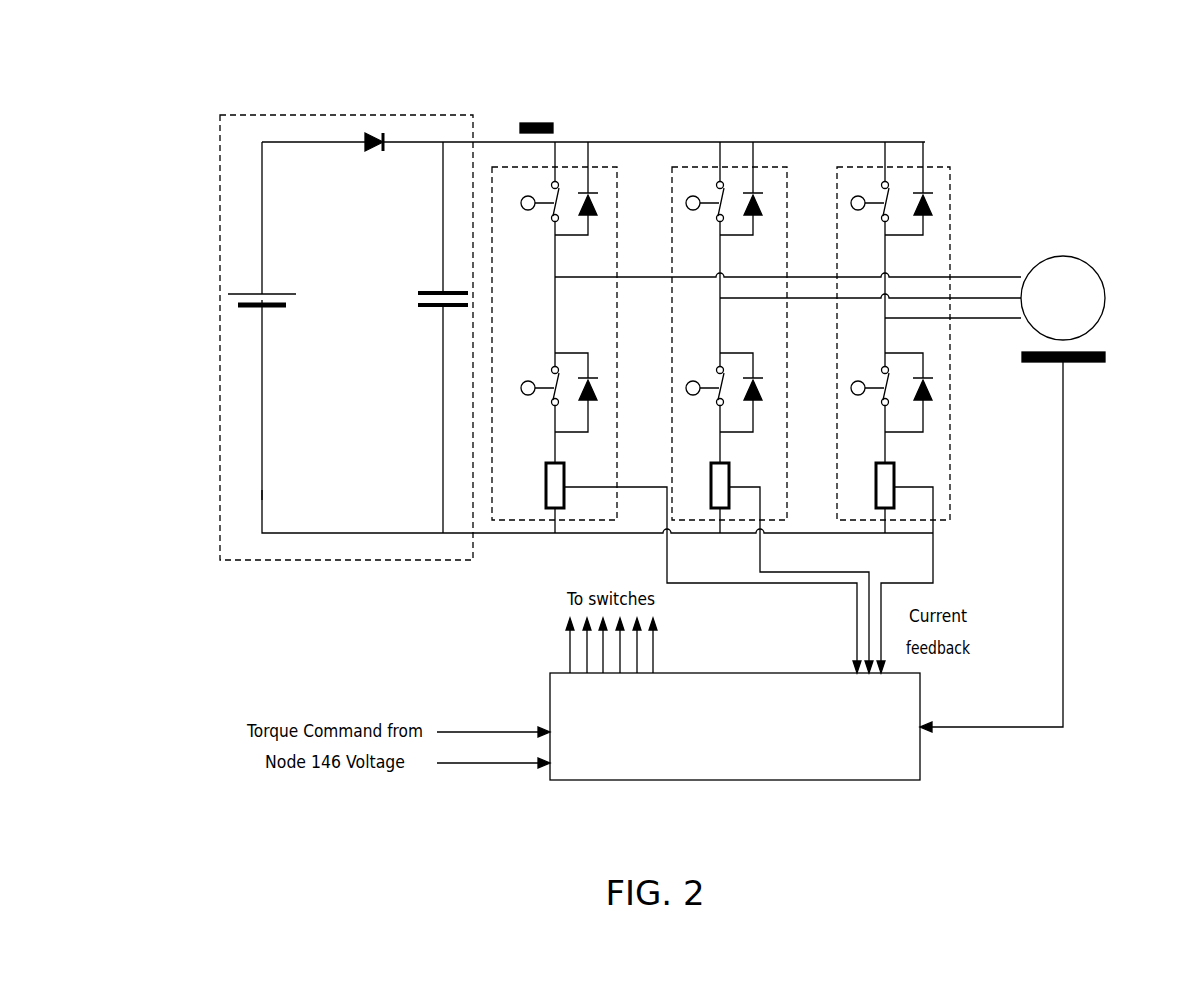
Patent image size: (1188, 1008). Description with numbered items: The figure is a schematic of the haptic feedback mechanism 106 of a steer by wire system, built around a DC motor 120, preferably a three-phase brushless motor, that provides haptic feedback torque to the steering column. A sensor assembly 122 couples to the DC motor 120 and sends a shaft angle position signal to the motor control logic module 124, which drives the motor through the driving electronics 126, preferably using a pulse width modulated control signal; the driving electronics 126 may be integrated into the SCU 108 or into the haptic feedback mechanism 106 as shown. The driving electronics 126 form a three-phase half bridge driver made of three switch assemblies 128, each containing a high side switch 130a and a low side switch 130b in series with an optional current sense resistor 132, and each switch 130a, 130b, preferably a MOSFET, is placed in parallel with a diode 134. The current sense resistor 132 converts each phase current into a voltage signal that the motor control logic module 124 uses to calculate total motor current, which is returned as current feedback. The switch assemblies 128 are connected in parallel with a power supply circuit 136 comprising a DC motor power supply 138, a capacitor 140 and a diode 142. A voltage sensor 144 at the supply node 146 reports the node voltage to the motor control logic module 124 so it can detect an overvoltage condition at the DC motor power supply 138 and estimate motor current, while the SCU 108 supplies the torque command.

The haptic feedback mechanism 106 is at (1026, 92).
The SCU 108 is at (483, 730).
The DC motor 120 is at (1076, 262).
The sensor assembly 122 is at (1105, 358).
The motor control logic module 124 is at (862, 770).
The driving electronics 126 is at (248, 490).
The switch assembly 128 is at (622, 166).
The high side switch 130a is at (526, 197).
The low side switch 130b is at (521, 388).
The current sense resistor 132 is at (545, 478).
The diode 134 is at (598, 170).
The power supply circuit 136 is at (250, 113).
The DC motor power supply 138 is at (245, 293).
The capacitor 140 is at (440, 292).
The diode 142 is at (378, 150).
The sensor 144 is at (537, 122).
The supply node 146 is at (556, 141).